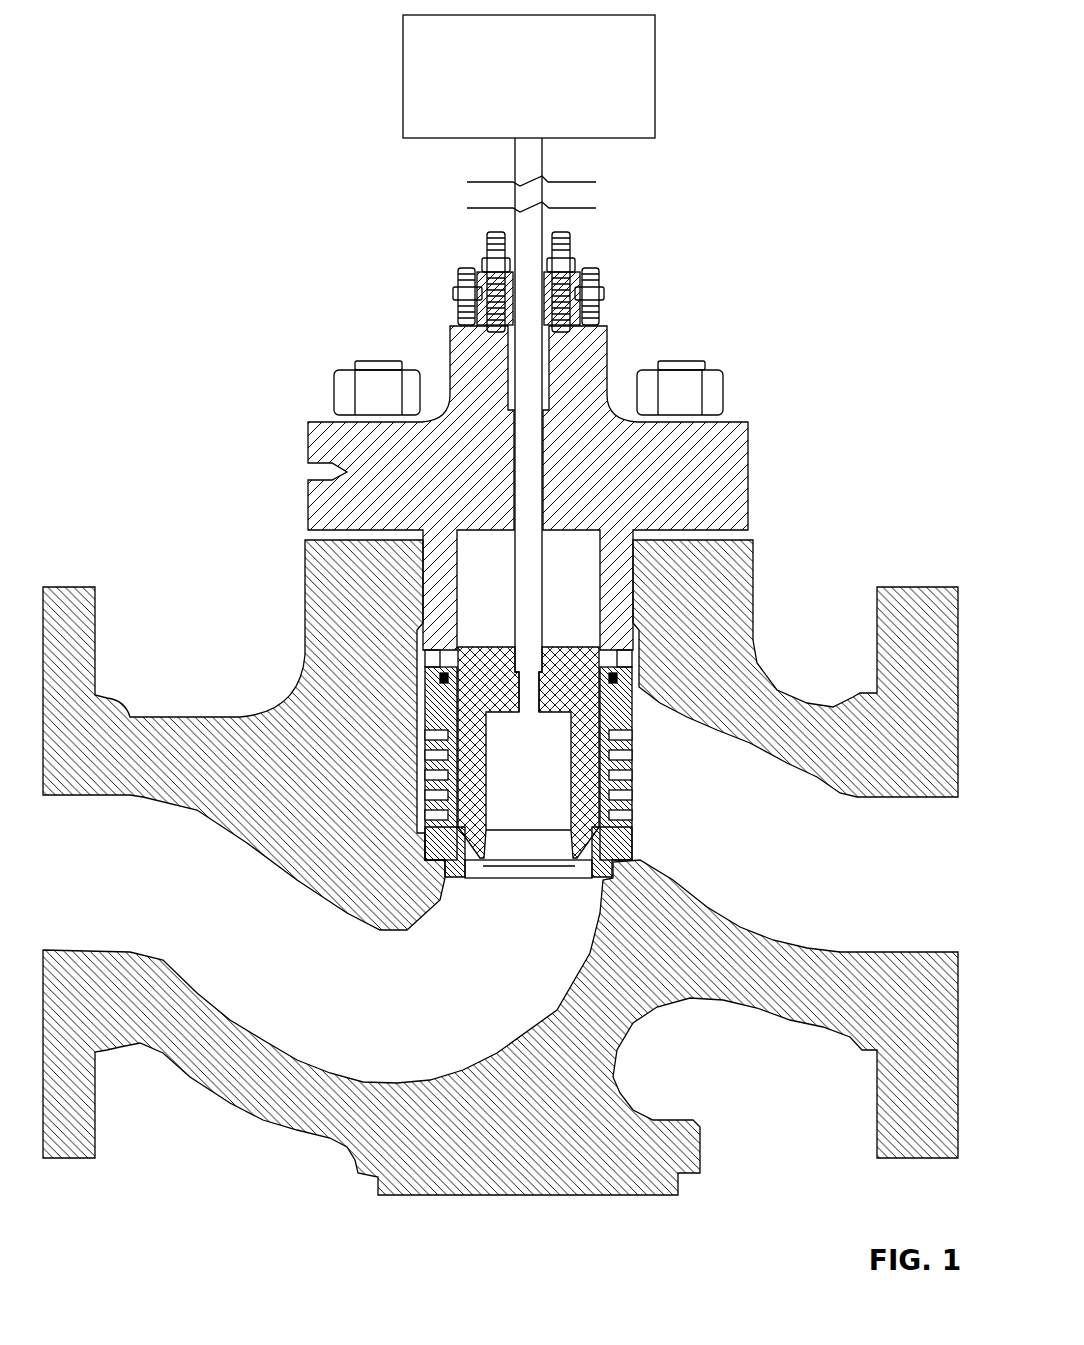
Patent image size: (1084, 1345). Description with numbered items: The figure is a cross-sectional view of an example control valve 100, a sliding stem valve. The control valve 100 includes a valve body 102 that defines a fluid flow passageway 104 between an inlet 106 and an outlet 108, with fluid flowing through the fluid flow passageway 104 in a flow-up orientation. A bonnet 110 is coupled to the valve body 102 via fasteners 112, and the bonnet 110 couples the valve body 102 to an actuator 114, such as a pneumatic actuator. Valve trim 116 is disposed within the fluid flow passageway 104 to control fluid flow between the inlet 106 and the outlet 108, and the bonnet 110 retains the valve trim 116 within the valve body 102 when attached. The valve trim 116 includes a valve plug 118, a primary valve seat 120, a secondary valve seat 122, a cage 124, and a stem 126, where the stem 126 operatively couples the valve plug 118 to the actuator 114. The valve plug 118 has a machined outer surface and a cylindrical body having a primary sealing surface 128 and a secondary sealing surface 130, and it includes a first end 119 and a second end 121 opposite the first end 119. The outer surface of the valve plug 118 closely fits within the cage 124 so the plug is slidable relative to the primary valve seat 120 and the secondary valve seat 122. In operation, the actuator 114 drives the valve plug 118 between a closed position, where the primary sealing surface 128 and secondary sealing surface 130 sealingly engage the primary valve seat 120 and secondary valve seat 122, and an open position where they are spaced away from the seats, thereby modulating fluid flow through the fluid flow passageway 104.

The control valve 100 is at (820, 57).
The valve body 102 is at (62, 587).
The fluid flow passageway 104 is at (370, 1005).
The inlet 106 is at (958, 870).
The outlet 108 is at (43, 885).
The bonnet 110 is at (750, 475).
The fasteners 112 is at (385, 362).
The actuator 114 is at (403, 75).
The valve trim 116 is at (570, 635).
The valve plug 118 is at (473, 687).
The first end 119 is at (485, 872).
The primary valve seat 120 is at (600, 863).
The second end 121 is at (472, 647).
The secondary valve seat 122 is at (630, 857).
The cage 124 is at (633, 767).
The stem 126 is at (546, 362).
The primary sealing surface 128 is at (462, 858).
The secondary sealing surface 130 is at (596, 845).